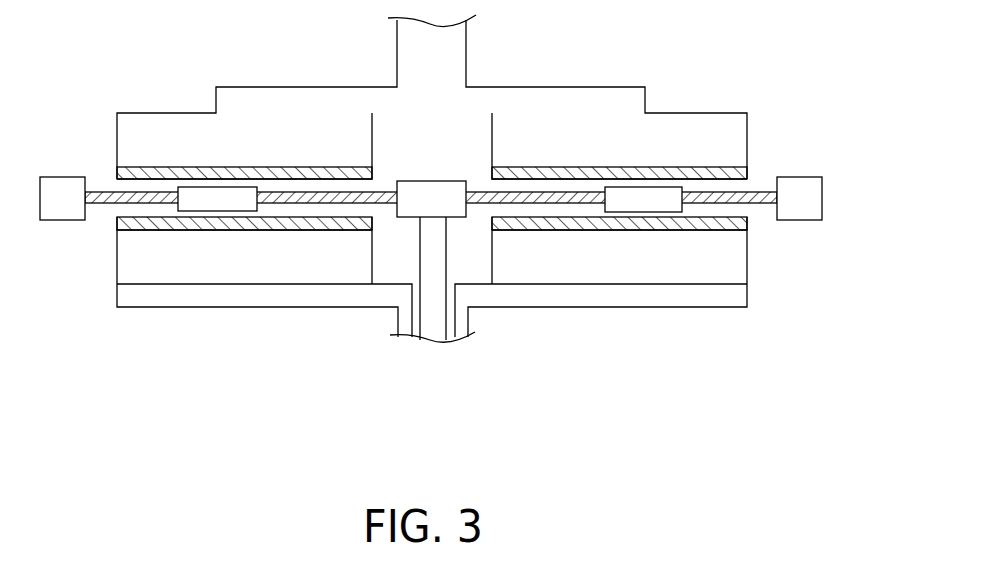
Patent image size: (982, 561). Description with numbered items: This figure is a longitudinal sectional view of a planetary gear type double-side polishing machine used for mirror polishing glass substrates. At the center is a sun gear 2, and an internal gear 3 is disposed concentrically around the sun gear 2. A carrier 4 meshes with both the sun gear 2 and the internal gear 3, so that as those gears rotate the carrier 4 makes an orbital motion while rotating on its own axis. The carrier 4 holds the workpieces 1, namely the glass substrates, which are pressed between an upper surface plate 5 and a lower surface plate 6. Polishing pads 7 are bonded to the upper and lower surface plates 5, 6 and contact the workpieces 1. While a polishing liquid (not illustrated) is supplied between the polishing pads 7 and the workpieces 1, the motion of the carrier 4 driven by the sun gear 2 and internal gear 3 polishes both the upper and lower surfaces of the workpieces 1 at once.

The workpiece 1 is at (221, 200).
The sun gear 2 is at (408, 207).
The internal gear 3 is at (63, 207).
The carrier 4 is at (148, 193).
The upper surface plate 5 is at (146, 142).
The lower surface plate 6 is at (277, 257).
The polishing pad 7 is at (193, 167).